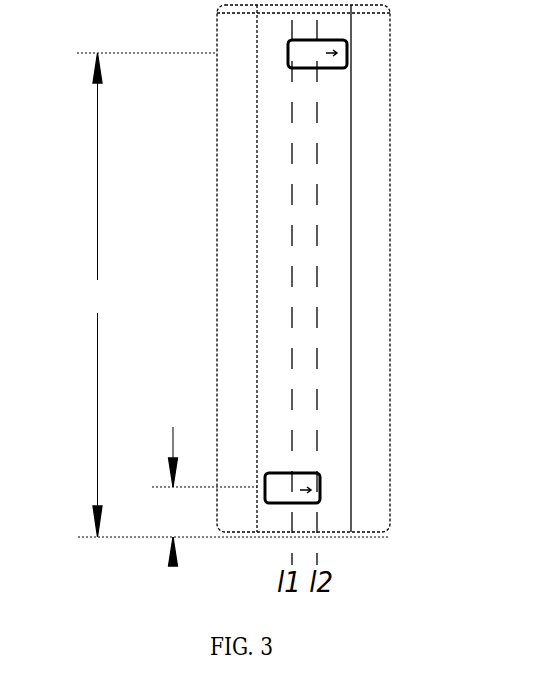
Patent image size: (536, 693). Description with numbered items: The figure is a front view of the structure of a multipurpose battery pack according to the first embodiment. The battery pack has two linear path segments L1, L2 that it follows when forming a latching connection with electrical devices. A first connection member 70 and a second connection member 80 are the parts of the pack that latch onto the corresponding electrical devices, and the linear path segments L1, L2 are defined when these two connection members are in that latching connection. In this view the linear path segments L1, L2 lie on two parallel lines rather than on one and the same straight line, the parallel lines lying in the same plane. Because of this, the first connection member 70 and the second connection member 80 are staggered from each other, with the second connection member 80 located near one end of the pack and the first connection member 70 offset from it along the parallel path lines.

The first connection member 70 is at (322, 490).
The second connection member 80 is at (217, 53).
The linear path segment L1 is at (173, 565).
The linear path segment L2 is at (233, 295).